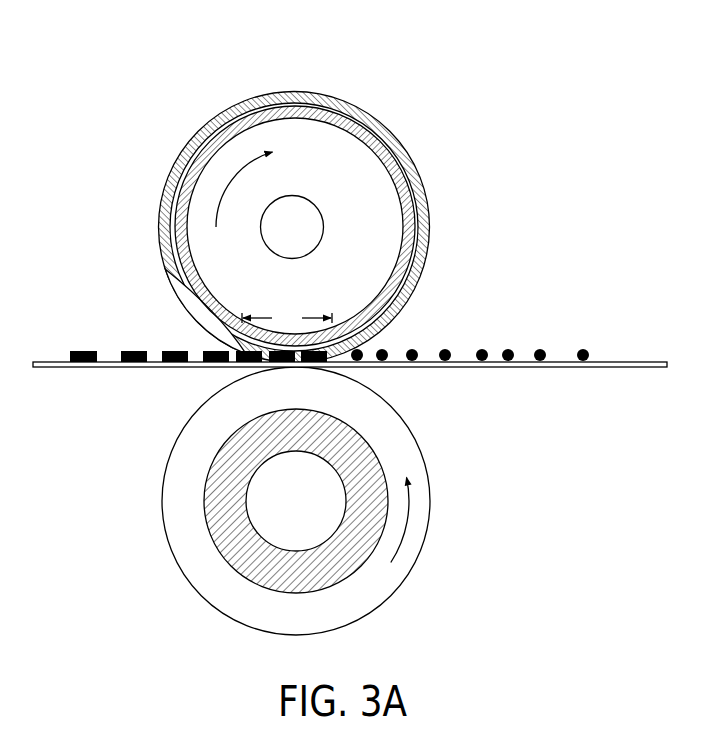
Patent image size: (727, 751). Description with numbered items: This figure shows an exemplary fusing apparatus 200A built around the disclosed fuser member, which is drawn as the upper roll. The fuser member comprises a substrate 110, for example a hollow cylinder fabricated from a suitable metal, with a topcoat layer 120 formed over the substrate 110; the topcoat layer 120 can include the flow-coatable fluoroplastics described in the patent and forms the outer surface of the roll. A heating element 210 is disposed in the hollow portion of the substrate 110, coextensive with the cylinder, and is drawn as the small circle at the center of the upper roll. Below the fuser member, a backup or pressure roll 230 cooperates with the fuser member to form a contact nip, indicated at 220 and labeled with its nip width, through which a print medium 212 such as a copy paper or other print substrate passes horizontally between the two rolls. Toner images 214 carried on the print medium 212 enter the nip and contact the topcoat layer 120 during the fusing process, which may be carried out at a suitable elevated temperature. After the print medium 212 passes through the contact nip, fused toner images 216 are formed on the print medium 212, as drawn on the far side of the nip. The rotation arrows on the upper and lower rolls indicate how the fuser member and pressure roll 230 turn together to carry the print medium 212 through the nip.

The fusing apparatus 200A is at (240, 330).
The topcoat layer 120 is at (232, 108).
The substrate 110 is at (283, 176).
The heating element 210 is at (314, 203).
The fusing nip 220 is at (250, 369).
The backup (or pressure) roll 230 is at (166, 455).
The print medium 212 is at (567, 370).
The toner images 214 is at (584, 349).
The fused toner images 216 is at (82, 350).